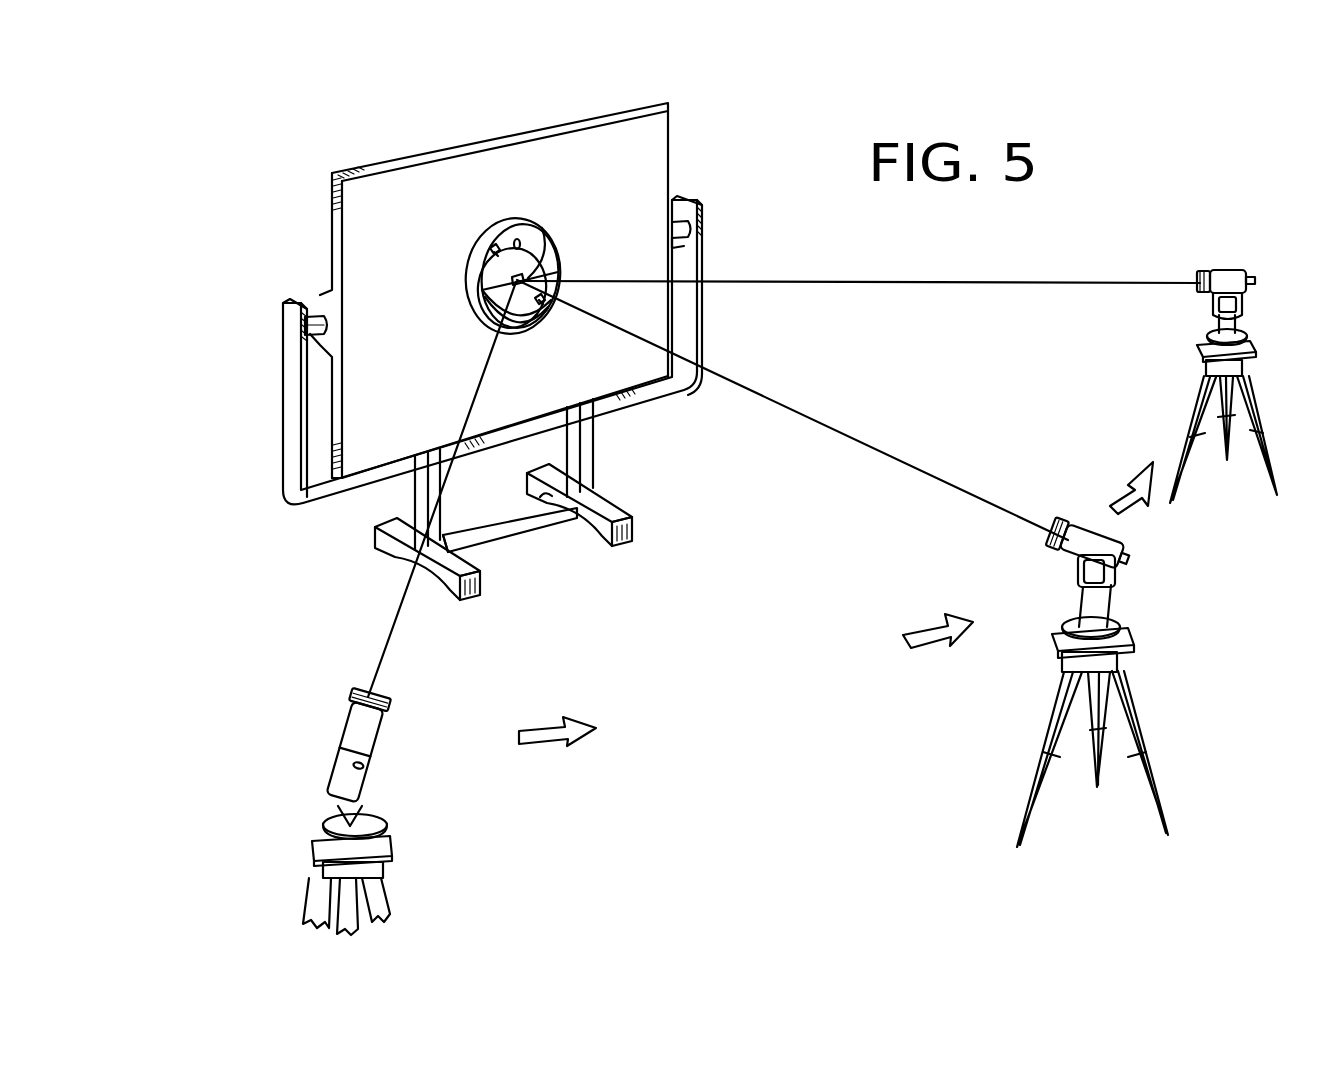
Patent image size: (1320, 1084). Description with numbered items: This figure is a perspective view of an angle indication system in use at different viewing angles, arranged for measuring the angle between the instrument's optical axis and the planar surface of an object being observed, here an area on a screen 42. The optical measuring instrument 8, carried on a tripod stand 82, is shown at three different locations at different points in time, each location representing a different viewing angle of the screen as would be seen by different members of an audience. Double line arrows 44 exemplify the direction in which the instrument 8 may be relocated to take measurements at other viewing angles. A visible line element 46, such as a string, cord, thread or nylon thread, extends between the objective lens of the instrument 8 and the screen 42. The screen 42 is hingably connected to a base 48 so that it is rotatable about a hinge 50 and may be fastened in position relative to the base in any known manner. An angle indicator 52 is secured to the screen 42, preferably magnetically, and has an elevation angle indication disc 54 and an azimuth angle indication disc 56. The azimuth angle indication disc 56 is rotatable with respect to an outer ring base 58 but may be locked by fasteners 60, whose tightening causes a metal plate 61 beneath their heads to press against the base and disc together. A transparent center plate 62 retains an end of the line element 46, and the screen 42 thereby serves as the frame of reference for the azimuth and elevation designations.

The optical measuring instrument 8 is at (1225, 278).
The screen 42 is at (657, 132).
The double line arrows 44 is at (1135, 510).
The line element 46 is at (952, 283).
The base 48 is at (290, 397).
The hinge 50 is at (313, 318).
The angle indicator 52 is at (466, 277).
The elevation angle indication disc 54 is at (472, 312).
The azimuth angle indication disc 56 is at (544, 262).
The outer ring base 58 is at (555, 246).
The fasteners 60 is at (503, 233).
The metal plate 61 is at (491, 253).
The center plate 62 is at (541, 240).
The tripod stand 82 is at (1208, 400).